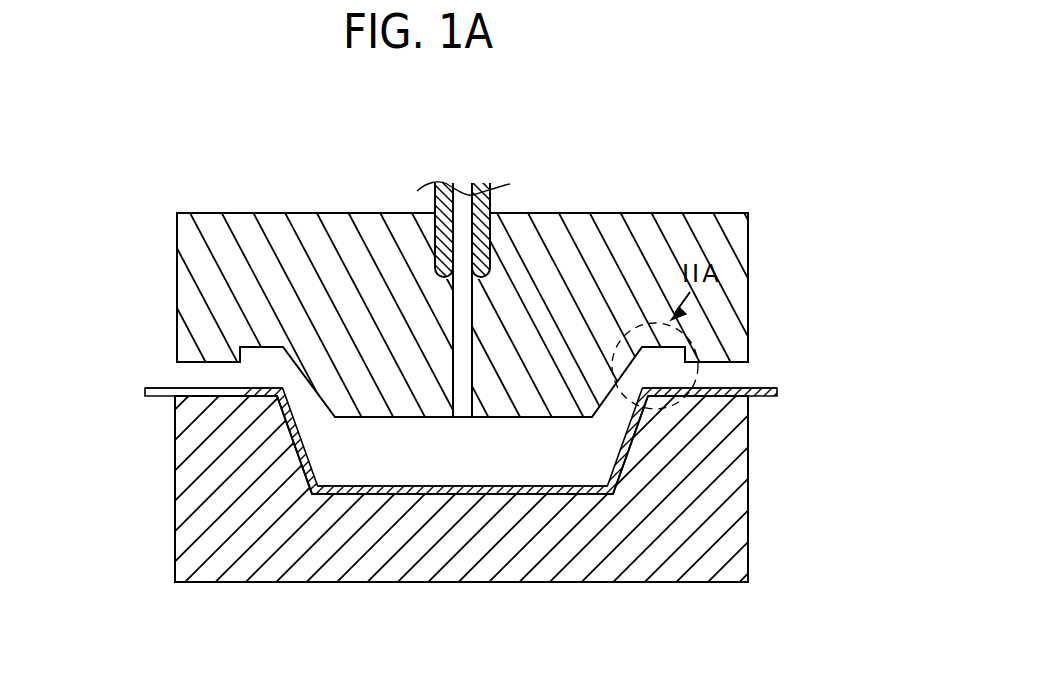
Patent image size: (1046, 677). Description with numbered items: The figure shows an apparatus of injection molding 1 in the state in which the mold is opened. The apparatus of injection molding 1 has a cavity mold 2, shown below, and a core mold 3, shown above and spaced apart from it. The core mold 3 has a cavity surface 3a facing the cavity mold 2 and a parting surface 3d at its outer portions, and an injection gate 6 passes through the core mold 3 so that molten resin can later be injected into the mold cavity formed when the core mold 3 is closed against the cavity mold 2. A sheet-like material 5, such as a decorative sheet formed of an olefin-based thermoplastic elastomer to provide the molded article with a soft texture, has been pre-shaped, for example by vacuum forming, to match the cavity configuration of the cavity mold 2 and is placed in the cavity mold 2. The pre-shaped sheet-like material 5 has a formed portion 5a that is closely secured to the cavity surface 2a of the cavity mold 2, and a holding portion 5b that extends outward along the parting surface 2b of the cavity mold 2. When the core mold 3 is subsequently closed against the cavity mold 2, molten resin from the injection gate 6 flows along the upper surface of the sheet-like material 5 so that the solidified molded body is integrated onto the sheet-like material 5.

The apparatus of injection molding 1 is at (160, 248).
The cavity mold 2 is at (745, 489).
The cavity surface 2a is at (445, 500).
The parting surface 2b is at (222, 403).
The core mold 3 is at (748, 283).
The cavity surface 3a is at (569, 424).
The parting surface 3d is at (186, 365).
The sheet-like material 5 is at (485, 484).
The formed portion 5a is at (514, 487).
The holding portion 5b is at (143, 389).
The injection gate 6 is at (457, 307).